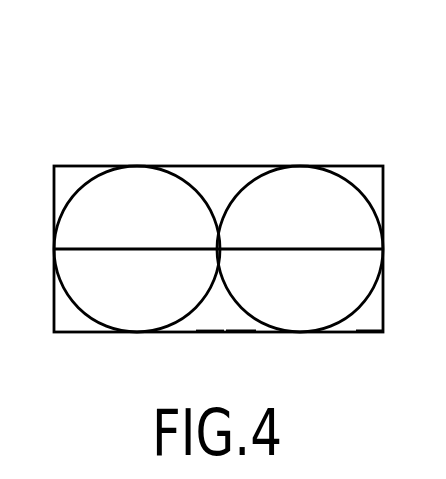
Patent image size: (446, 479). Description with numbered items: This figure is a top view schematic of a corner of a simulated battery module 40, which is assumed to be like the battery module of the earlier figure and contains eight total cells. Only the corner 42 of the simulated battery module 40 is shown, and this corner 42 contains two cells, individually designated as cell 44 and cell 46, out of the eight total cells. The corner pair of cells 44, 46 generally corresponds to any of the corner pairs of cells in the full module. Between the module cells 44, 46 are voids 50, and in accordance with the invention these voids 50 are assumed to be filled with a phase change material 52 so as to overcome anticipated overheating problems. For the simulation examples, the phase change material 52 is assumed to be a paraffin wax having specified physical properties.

The simulated battery module 40 is at (348, 110).
The corner 42 is at (220, 166).
The cell 44 is at (155, 223).
The cell 46 is at (320, 223).
The voids 50 is at (203, 317).
The phase change material 52 is at (235, 317).